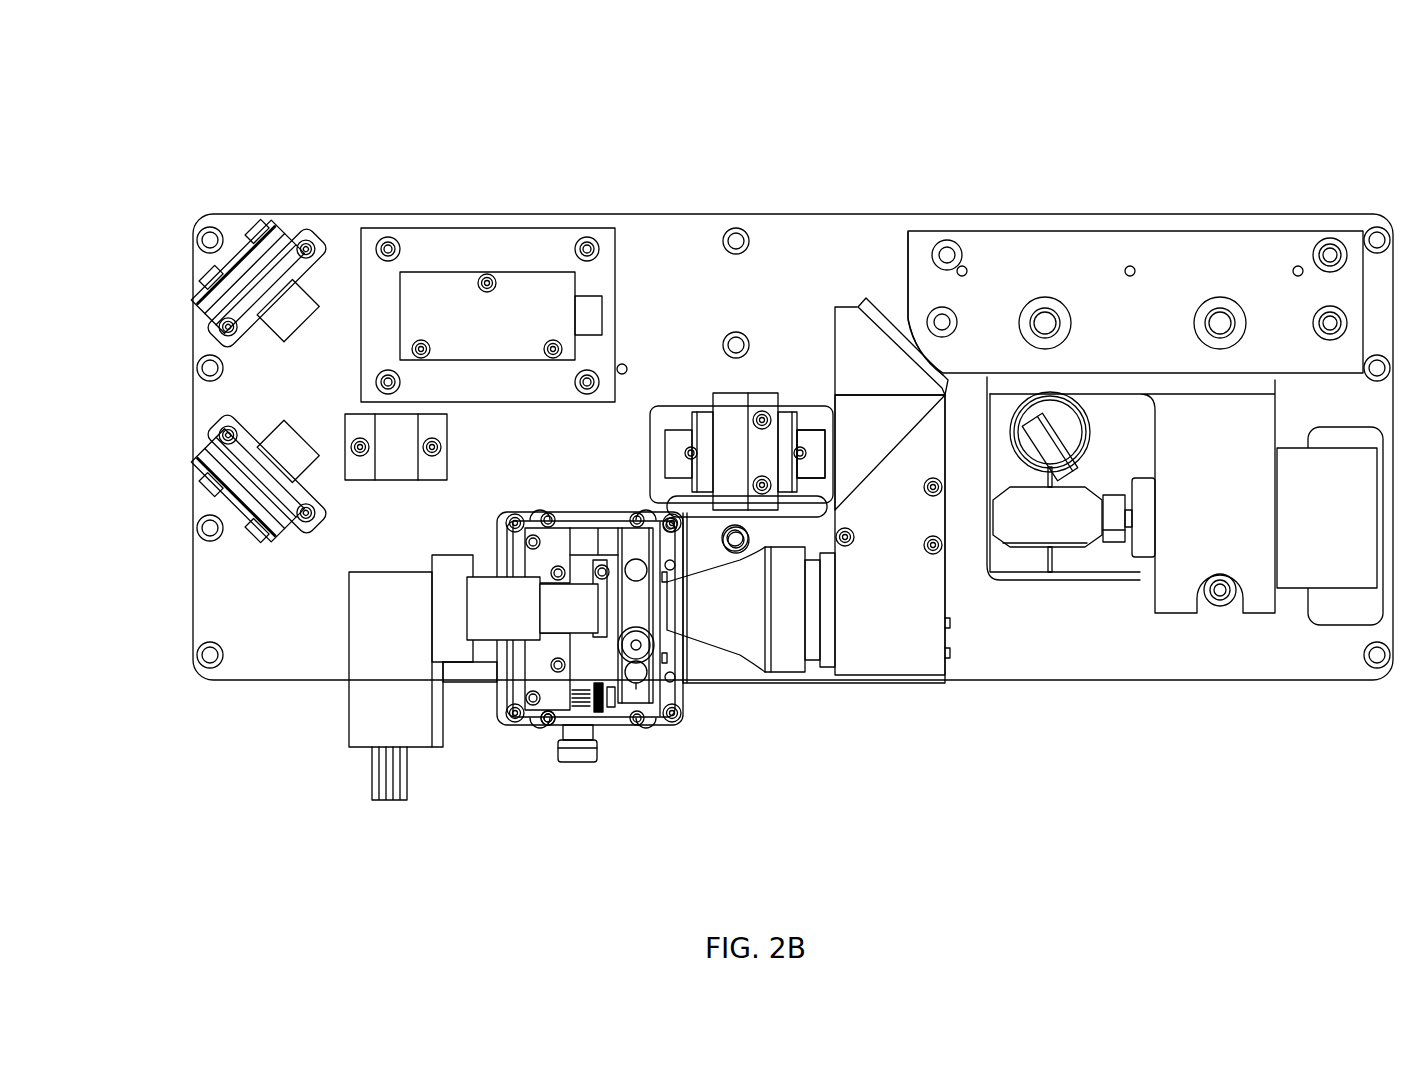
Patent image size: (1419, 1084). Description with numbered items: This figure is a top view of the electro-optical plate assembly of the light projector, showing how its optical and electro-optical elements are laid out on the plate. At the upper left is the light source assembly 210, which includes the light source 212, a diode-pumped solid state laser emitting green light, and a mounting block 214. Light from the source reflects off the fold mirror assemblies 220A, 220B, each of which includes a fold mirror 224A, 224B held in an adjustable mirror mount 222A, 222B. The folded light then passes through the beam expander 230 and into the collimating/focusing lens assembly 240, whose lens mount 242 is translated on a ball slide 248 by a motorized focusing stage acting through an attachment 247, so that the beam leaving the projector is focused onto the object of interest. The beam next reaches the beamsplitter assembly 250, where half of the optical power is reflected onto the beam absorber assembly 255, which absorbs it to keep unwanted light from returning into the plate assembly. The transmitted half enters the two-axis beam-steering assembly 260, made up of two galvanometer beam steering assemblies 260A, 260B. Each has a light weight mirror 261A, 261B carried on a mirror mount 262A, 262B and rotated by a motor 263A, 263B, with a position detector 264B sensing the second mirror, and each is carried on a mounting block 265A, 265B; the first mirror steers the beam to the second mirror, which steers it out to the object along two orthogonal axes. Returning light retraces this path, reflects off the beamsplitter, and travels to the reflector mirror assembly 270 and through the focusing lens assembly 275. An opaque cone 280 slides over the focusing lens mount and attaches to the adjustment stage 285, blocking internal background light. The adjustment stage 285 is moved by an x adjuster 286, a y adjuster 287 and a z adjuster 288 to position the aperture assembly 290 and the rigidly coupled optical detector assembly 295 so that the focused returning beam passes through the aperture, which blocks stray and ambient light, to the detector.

The light source assembly 210 is at (458, 176).
The light source 212 is at (400, 315).
The mounting block 214 is at (508, 270).
The fold mirror assembly 220A is at (196, 312).
The fold mirror assembly 220B is at (199, 457).
The adjustable mirror mount 222A is at (245, 247).
The adjustable mirror mount 222B is at (245, 512).
The fold mirror 224A is at (298, 318).
The fold mirror 224B is at (290, 433).
The beam expander 230 is at (364, 508).
The collimating/focusing lens assembly 240 is at (709, 362).
The lens mount 242 is at (765, 390).
The attachment 247 is at (807, 425).
The ball slide 248 is at (678, 423).
The beamsplitter assembly 250 is at (930, 450).
The beam absorber assembly 255 is at (852, 284).
The two-axis beam-steering assembly 260 is at (1089, 77).
The beam steering assembly 260A is at (1100, 296).
The beam steering assembly 260B is at (1076, 672).
The light weight mirror 261A is at (1063, 427).
The light weight mirror 261B is at (1012, 507).
The mirror mount 262A is at (1088, 440).
The mirror mount 262B is at (1115, 545).
The motor 263A is at (1105, 440).
The motor 263B is at (1140, 560).
The position detector 264B is at (1298, 590).
The mounting block 265A is at (990, 418).
The mounting block 265B is at (1258, 615).
The reflector mirror assembly 270 is at (883, 702).
The focusing lens assembly 275 is at (815, 695).
The opaque cone 280 is at (739, 678).
The adjustment stage 285 is at (652, 750).
The x adjuster 286 is at (580, 763).
The y adjuster 287 is at (656, 643).
The z adjuster 288 is at (552, 727).
The aperture assembly 290 is at (485, 667).
The optical detector assembly 295 is at (352, 769).